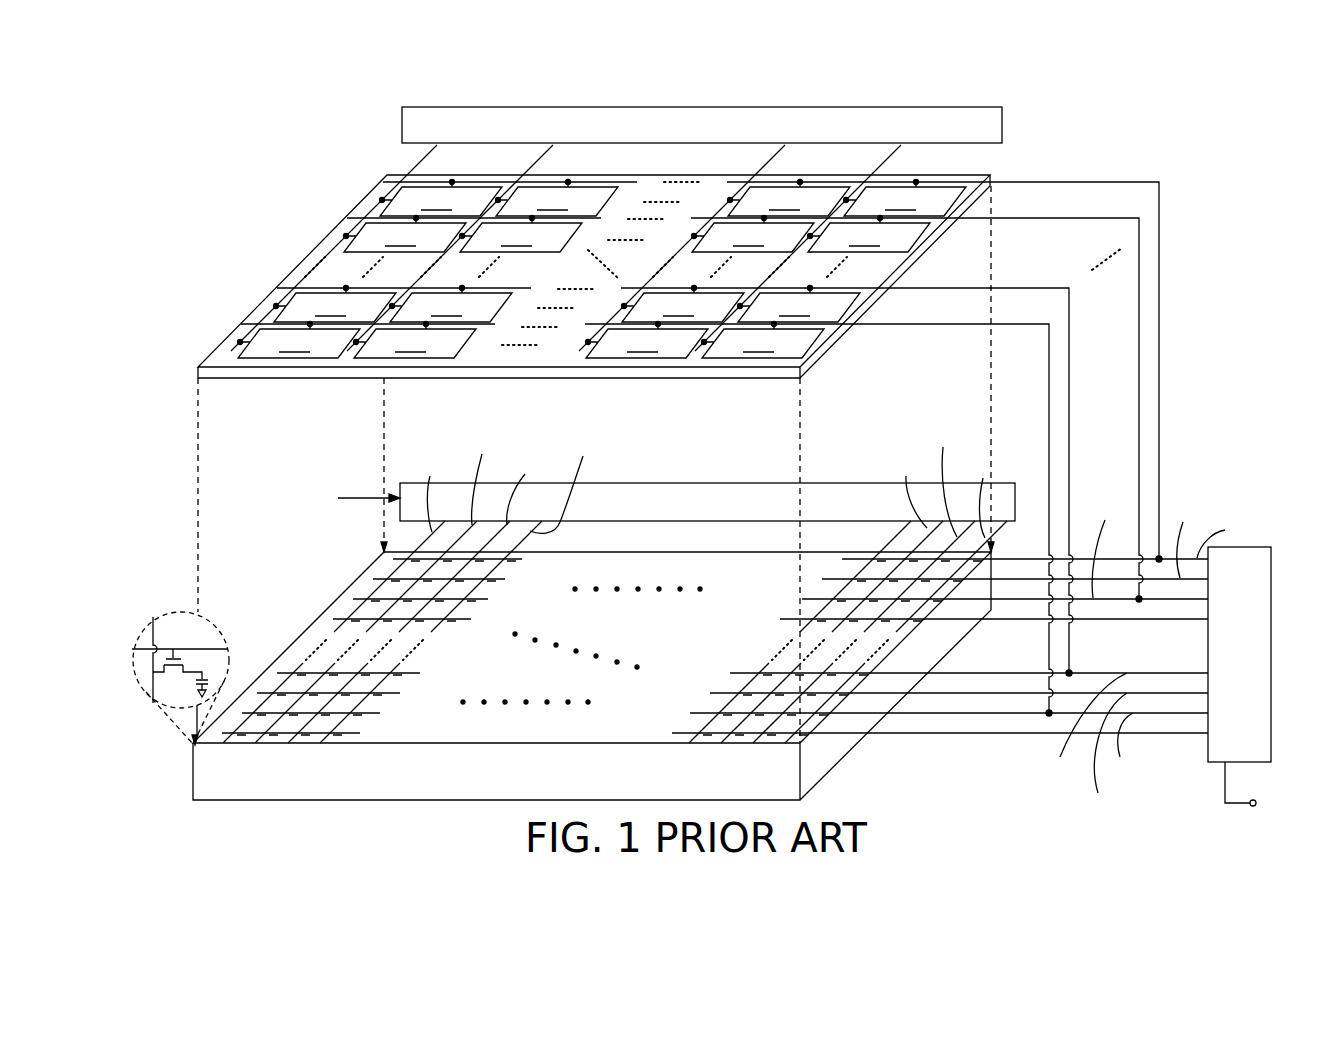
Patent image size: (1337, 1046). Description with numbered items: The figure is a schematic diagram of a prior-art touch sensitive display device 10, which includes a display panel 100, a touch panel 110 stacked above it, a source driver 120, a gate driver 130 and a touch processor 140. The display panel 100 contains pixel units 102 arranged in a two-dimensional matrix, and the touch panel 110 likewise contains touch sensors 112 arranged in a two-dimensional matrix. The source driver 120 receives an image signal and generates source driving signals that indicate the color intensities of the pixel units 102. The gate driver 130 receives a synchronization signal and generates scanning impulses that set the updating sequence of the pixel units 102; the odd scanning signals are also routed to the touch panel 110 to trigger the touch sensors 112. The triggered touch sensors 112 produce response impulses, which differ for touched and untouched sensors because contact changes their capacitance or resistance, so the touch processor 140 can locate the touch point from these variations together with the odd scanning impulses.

The touch sensitive display device 10 is at (1150, 105).
The display panel 100 is at (845, 752).
The pixel unit 102 is at (365, 583).
The touch panel 110 is at (387, 176).
The touch sensor 112 is at (602, 269).
The source driver 120 is at (682, 482).
The gate driver 130 is at (1272, 649).
The touch processor 140 is at (701, 106).